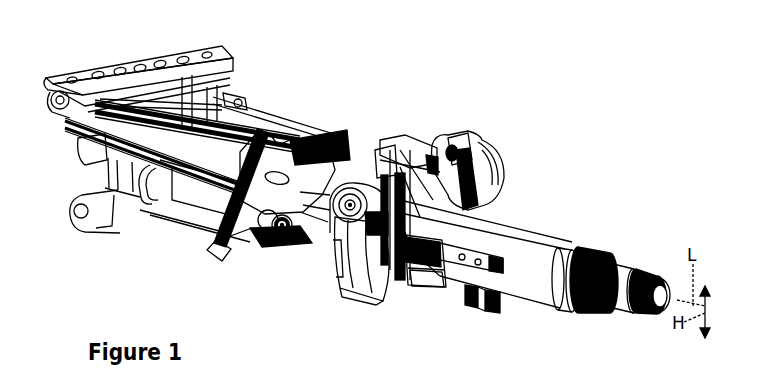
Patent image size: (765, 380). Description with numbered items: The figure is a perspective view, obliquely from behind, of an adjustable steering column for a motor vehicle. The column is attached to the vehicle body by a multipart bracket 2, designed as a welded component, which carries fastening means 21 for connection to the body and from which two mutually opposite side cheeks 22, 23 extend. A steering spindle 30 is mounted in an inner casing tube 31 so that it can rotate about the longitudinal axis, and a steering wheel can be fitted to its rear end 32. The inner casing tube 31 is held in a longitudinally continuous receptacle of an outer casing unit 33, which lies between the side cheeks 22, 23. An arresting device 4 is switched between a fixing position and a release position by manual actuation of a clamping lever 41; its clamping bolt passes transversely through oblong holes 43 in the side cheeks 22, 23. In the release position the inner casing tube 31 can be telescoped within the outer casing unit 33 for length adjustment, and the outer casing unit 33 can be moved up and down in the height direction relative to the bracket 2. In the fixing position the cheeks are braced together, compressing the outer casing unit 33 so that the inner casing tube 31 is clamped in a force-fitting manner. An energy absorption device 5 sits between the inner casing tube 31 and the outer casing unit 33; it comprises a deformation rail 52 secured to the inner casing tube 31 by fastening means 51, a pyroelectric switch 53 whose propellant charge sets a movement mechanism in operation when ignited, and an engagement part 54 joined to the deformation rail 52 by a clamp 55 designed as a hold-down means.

The bracket 2 is at (175, 150).
The fastening means 21 is at (185, 55).
The side cheek 22 is at (413, 143).
The side cheek 23 is at (474, 158).
The steering spindle 30 is at (605, 287).
The inner casing tube 31 is at (543, 275).
The rear end 32 is at (653, 275).
The outer casing unit 33 is at (200, 205).
The arresting device 4 is at (334, 288).
The clamping lever 41 is at (357, 287).
The oblong holes 43 is at (389, 165).
The energy absorption device 5 is at (447, 272).
The fastening means 51 is at (512, 252).
The deformation rail 52 is at (480, 252).
The pyroelectric switch 53 is at (278, 243).
The engagement part 54 is at (410, 277).
The clamp 55 is at (433, 278).